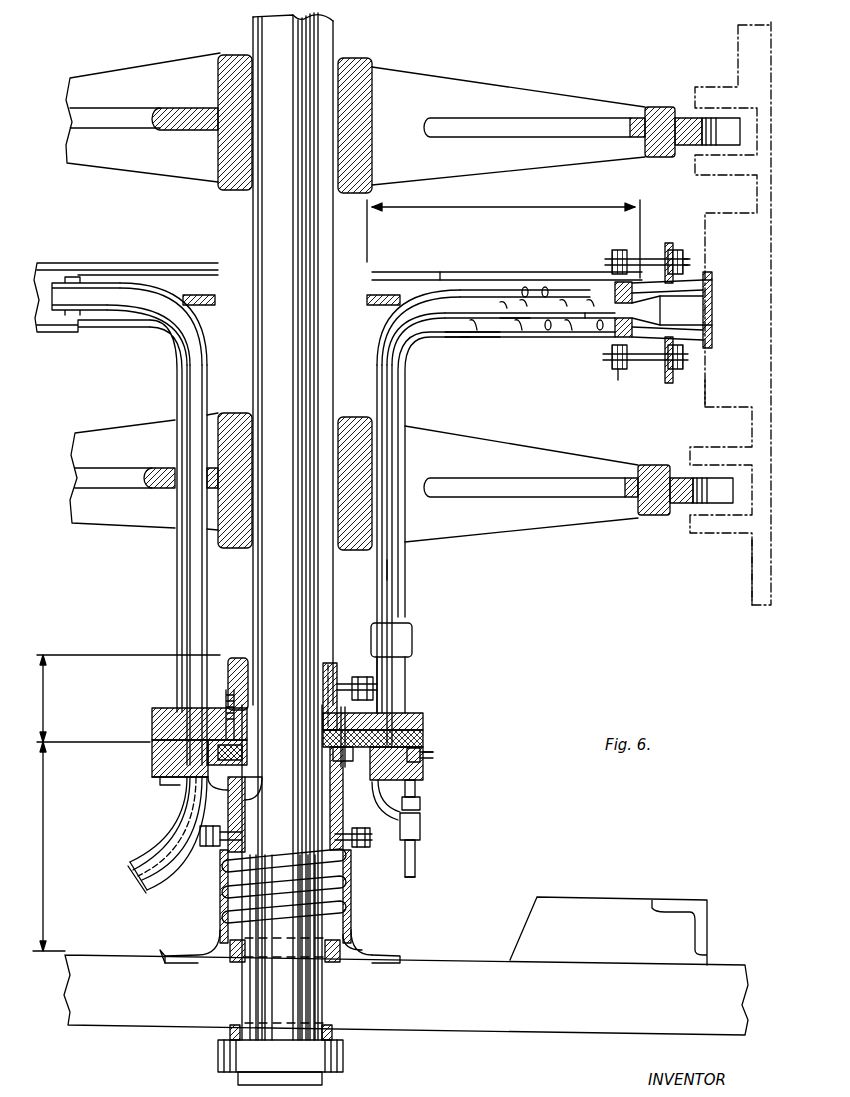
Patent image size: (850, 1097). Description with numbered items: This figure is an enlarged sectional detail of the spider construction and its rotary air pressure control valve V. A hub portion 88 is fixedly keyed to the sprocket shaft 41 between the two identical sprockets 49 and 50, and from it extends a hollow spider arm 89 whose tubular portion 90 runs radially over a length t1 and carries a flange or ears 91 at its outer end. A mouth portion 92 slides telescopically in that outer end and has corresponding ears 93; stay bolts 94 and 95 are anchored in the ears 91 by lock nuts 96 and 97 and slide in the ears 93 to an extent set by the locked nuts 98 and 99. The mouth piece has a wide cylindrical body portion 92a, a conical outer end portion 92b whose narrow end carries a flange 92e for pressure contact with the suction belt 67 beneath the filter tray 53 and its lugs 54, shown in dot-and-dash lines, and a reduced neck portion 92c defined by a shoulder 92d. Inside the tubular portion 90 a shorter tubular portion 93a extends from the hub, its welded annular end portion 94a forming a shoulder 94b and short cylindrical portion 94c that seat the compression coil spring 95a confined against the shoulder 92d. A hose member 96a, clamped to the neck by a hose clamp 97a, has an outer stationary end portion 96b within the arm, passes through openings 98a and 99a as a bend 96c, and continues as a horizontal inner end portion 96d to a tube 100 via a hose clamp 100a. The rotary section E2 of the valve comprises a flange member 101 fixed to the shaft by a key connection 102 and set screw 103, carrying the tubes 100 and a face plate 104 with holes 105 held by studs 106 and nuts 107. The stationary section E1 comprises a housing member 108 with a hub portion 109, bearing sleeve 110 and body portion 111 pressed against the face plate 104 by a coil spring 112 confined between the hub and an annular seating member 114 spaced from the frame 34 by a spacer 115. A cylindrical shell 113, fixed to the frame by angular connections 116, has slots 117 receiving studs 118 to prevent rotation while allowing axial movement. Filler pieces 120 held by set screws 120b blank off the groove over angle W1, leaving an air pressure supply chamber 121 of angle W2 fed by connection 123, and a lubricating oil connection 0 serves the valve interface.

The sprocket shaft 41 is at (252, 221).
The sprocket 50 is at (520, 88).
The sprocket 49 is at (530, 520).
The lugs 54 is at (712, 87).
The filter tray 53 is at (740, 580).
The suction belt 67 is at (705, 412).
The length of tubular portion t1 is at (503, 238).
The hub portion 88 is at (233, 256).
The bend 96c is at (420, 298).
The tubular portion 90 is at (468, 272).
The hose member 96a is at (412, 598).
The inner end portion 96d is at (395, 577).
The lock nut 96 is at (613, 258).
The outer stationary end portion 96b is at (513, 332).
The shoulder 92d is at (615, 283).
The lock nut 97 is at (630, 250).
The nut 98 is at (680, 253).
The stay bolt 94 is at (657, 262).
The nut 99 is at (686, 258).
The stay bolt 95 is at (648, 350).
The ears 93 is at (667, 348).
The ears 91 is at (619, 352).
The mouth portion 92 is at (692, 342).
The cylindrical body portion 92a is at (655, 337).
The conical outer end portion 92b is at (712, 318).
The flange 92e is at (712, 283).
The neck portion 92c is at (596, 320).
The annular end portion 94a is at (486, 330).
The shoulder 94b is at (524, 280).
The short cylindrical portion 94c is at (527, 278).
The compression coil spring 95a is at (548, 333).
The hose clamp 97a is at (600, 338).
The shorter tubular portion 93a is at (445, 272).
The opening 98a is at (455, 340).
The opening 99a is at (440, 334).
The spider arm 89 is at (497, 350).
The hose clamp 100a is at (412, 640).
The horizontal tube 100 is at (404, 680).
The key connection 102 is at (331, 663).
The set screw 103 is at (362, 677).
The flange member 101 is at (426, 722).
The face plate 104 is at (426, 745).
The holes 105 is at (398, 707).
The flange-like body portion 111 is at (428, 780).
The rotary valve construction V is at (440, 749).
The set screws 120b is at (438, 753).
The arcuate filler piece 120 is at (418, 778).
The lubricating oil connection 0 is at (421, 826).
The hub portion 109 is at (363, 820).
The studs 118 is at (365, 847).
The studs 106 is at (233, 733).
The air pressure supply chamber 121 is at (152, 748).
The housing member 108 is at (148, 775).
The nuts 107 is at (238, 756).
The bearing sleeve 110 is at (242, 813).
The slots 117 is at (185, 818).
The air pressure connection 123 is at (143, 845).
The cylindrical shell 113 is at (350, 884).
The angle W2 is at (218, 885).
The compression coil spring 112 is at (353, 914).
The angular connections 116 is at (380, 956).
The angle W1 is at (165, 950).
The spacer 115 is at (237, 958).
The annular seating member 114 is at (338, 958).
The frame structure 34 is at (400, 1030).
The stationary section E1 is at (43, 846).
The rotary section E2 is at (126, 698).